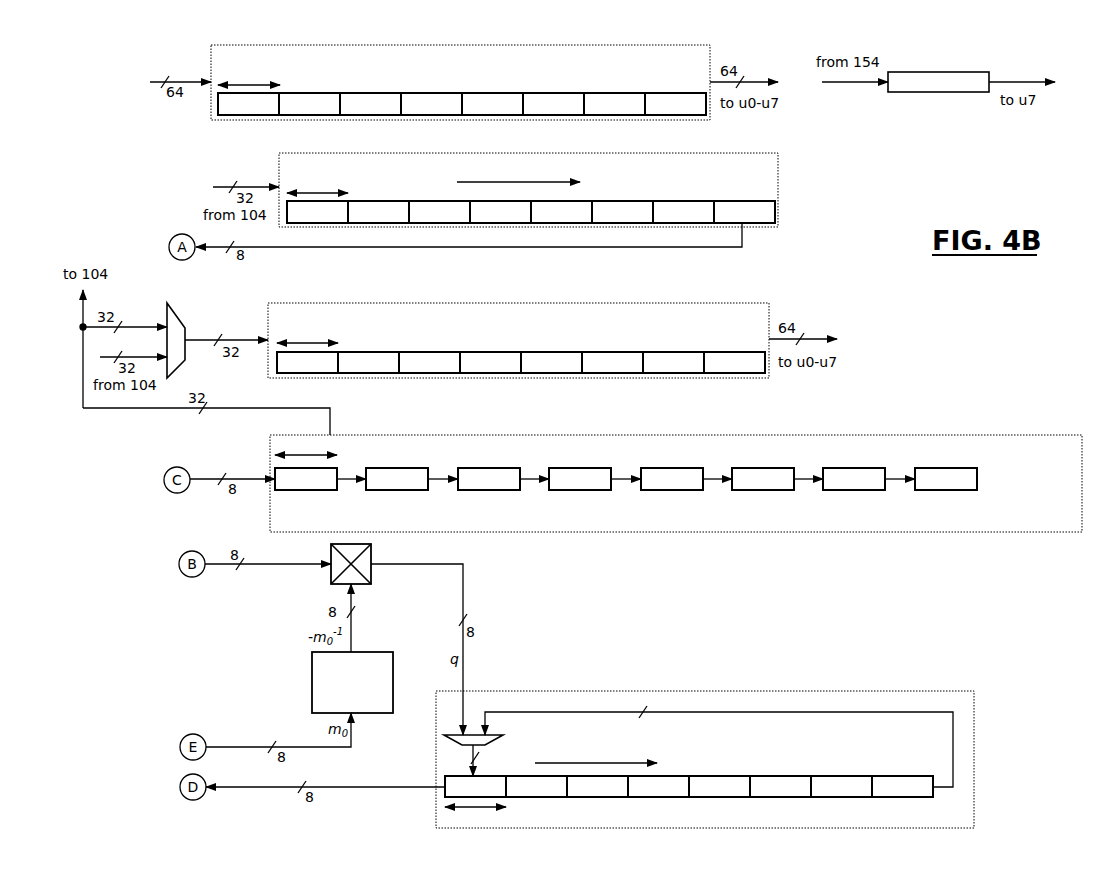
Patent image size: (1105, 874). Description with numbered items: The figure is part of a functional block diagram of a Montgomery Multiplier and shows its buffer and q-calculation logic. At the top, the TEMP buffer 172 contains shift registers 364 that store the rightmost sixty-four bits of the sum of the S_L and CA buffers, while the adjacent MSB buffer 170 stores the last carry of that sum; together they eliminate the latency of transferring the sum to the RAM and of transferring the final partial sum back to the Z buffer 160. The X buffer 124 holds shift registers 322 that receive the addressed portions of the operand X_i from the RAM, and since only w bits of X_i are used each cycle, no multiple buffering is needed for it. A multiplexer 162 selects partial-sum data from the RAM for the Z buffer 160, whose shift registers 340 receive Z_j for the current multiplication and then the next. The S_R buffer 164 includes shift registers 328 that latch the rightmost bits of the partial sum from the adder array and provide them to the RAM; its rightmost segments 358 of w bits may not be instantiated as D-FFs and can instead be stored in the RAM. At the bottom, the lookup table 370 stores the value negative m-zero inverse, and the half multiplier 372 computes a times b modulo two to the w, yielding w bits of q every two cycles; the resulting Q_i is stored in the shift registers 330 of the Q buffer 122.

The TEMP buffer 172 is at (530, 45).
The shift registers 364 is at (632, 82).
The MSB buffer 170 is at (940, 72).
The X buffer 124 is at (279, 173).
The shift registers 322 is at (683, 188).
The multiplexer 162 is at (175, 310).
The Z buffer 160 is at (515, 303).
The shift registers 340 is at (673, 340).
The S_R buffer 164 is at (270, 455).
The shift registers 328 is at (985, 480).
The segments 358 is at (1013, 504).
The half multiplier 372 is at (373, 583).
The lookup table 370 is at (312, 653).
The Q buffer 122 is at (700, 691).
The shift registers 330 is at (870, 762).